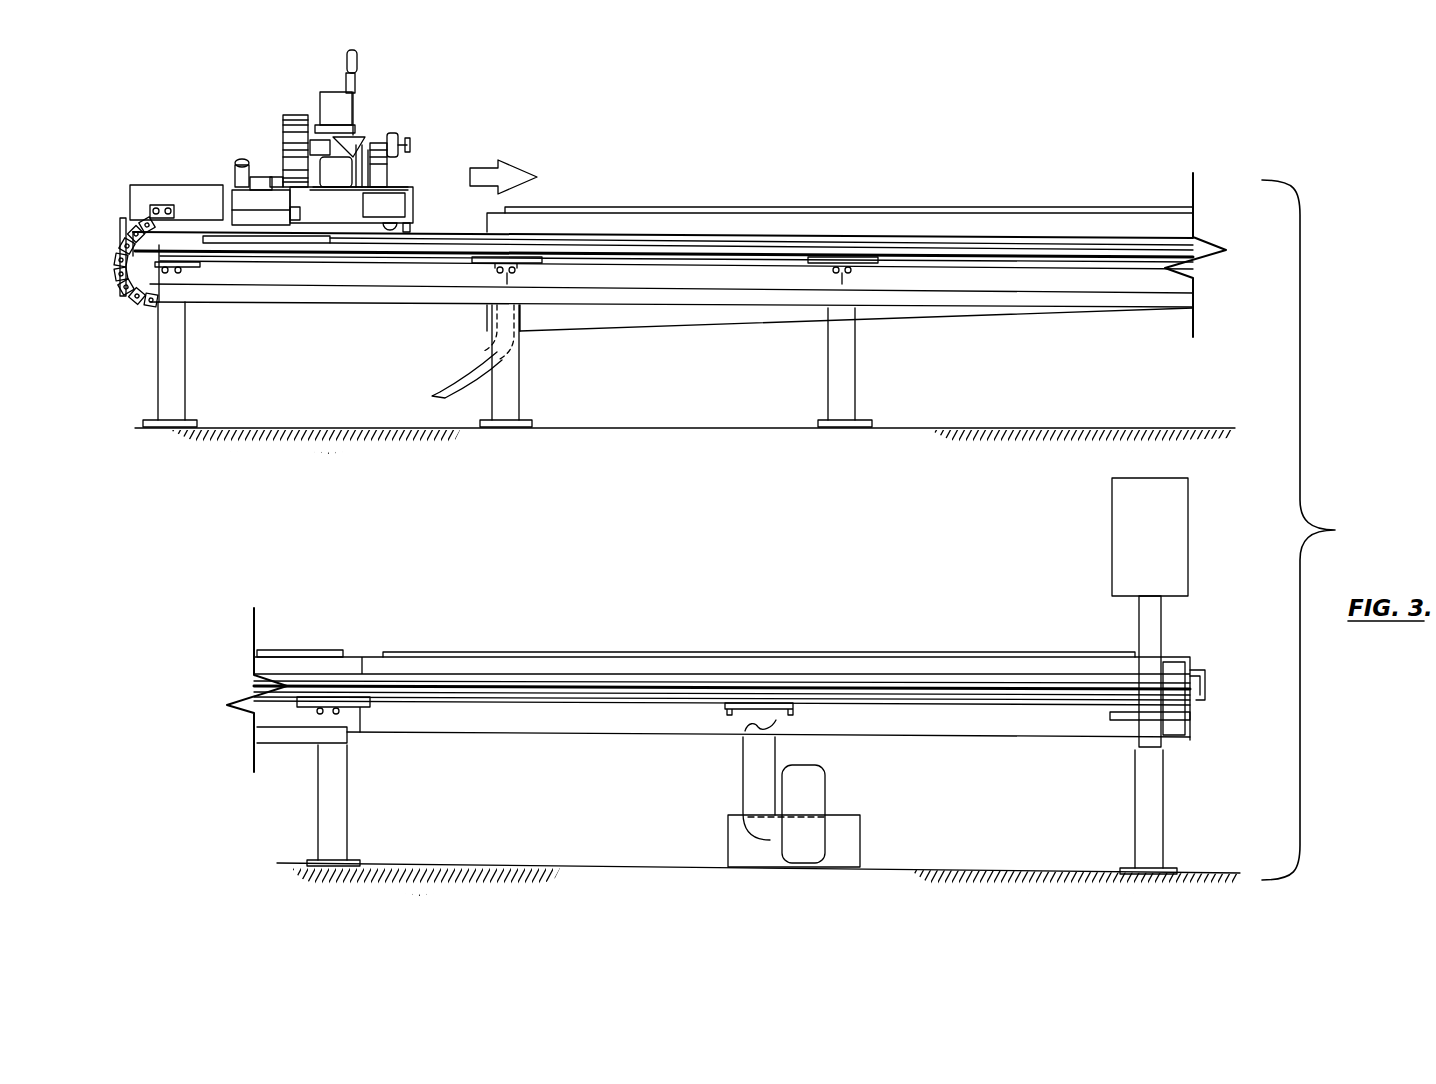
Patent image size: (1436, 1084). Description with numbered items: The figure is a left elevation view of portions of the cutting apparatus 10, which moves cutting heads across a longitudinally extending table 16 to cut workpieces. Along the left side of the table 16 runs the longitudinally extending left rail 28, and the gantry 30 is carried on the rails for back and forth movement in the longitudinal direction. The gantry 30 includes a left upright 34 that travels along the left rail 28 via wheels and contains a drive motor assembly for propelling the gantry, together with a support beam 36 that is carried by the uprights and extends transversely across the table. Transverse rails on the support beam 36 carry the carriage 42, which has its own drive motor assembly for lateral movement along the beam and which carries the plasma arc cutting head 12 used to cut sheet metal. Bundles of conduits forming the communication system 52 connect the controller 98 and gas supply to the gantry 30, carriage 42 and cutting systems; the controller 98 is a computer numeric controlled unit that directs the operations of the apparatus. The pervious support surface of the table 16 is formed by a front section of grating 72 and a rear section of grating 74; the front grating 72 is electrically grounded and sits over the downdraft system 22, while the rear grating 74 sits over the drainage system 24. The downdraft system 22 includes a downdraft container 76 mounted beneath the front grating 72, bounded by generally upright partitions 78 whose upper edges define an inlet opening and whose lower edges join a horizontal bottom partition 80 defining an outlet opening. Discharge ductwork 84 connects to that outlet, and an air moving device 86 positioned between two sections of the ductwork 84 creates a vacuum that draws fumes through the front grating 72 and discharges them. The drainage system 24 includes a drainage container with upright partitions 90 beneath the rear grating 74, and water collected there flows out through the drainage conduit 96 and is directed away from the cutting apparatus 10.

The cutting apparatus 10 is at (1246, 151).
The plasma arc cutting head 12 is at (402, 168).
The table 16 is at (185, 337).
The downdraft system 22 is at (718, 765).
The drainage system 24 is at (446, 354).
The left rail 28 is at (448, 232).
The gantry 30 is at (444, 228).
The left upright 34 is at (352, 220).
The support beam 36 is at (337, 182).
The carriage 42 is at (315, 127).
The communication system 52 is at (290, 118).
The front section of grating 72 is at (447, 652).
The rear section of grating 74 is at (677, 207).
The downdraft container 76 is at (988, 740).
The upright partitions 78 is at (522, 715).
The bottom partition 80 is at (618, 738).
The discharge ductwork 84 is at (777, 752).
The air moving device 86 is at (827, 807).
The upright partitions 90 is at (590, 222).
The drainage conduit 96 is at (435, 395).
The controller 98 is at (1137, 537).